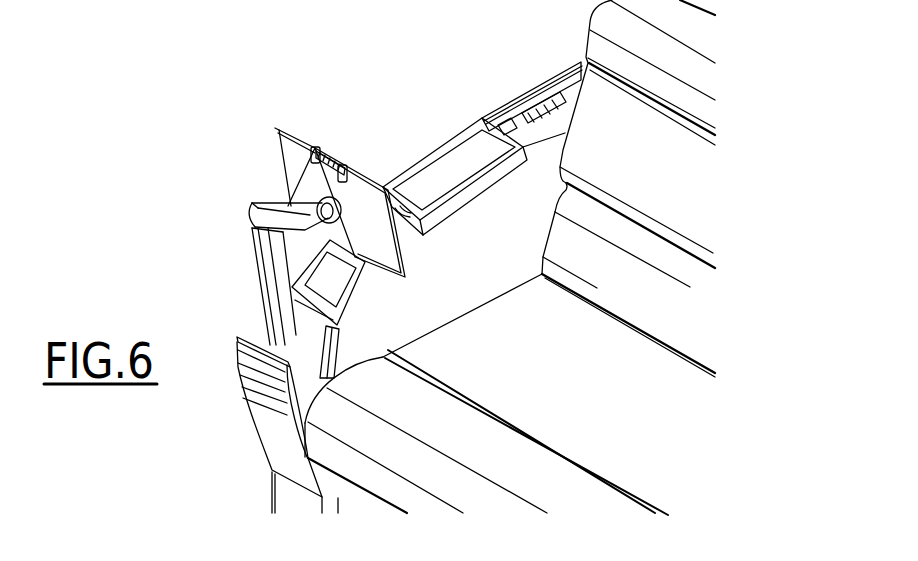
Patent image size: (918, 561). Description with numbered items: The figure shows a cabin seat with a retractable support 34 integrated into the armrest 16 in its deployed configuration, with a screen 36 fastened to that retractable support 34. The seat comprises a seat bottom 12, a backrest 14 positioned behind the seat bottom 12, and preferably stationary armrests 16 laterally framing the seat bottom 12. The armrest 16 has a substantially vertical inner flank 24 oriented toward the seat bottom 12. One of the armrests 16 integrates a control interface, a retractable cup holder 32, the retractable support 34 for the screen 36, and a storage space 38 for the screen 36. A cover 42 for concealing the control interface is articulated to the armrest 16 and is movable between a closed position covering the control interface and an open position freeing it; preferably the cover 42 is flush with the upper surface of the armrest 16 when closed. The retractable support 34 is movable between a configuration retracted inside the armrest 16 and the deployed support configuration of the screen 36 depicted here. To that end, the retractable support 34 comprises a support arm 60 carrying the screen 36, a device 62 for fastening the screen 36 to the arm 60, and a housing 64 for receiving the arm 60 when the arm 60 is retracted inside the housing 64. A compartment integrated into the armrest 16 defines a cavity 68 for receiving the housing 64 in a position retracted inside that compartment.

The seat bottom 12 is at (493, 394).
The backrest 14 is at (697, 180).
The armrest 16 is at (403, 110).
The inner flank 24 is at (480, 282).
The retractable cup holder 32 is at (352, 281).
The retractable support 34 is at (242, 418).
The screen 36 is at (359, 190).
The storage space 38 is at (527, 91).
The cover 42 is at (450, 158).
The support arm 60 is at (252, 245).
The fastening device 62 is at (311, 179).
The housing 64 is at (260, 328).
The cavity 68 is at (333, 327).